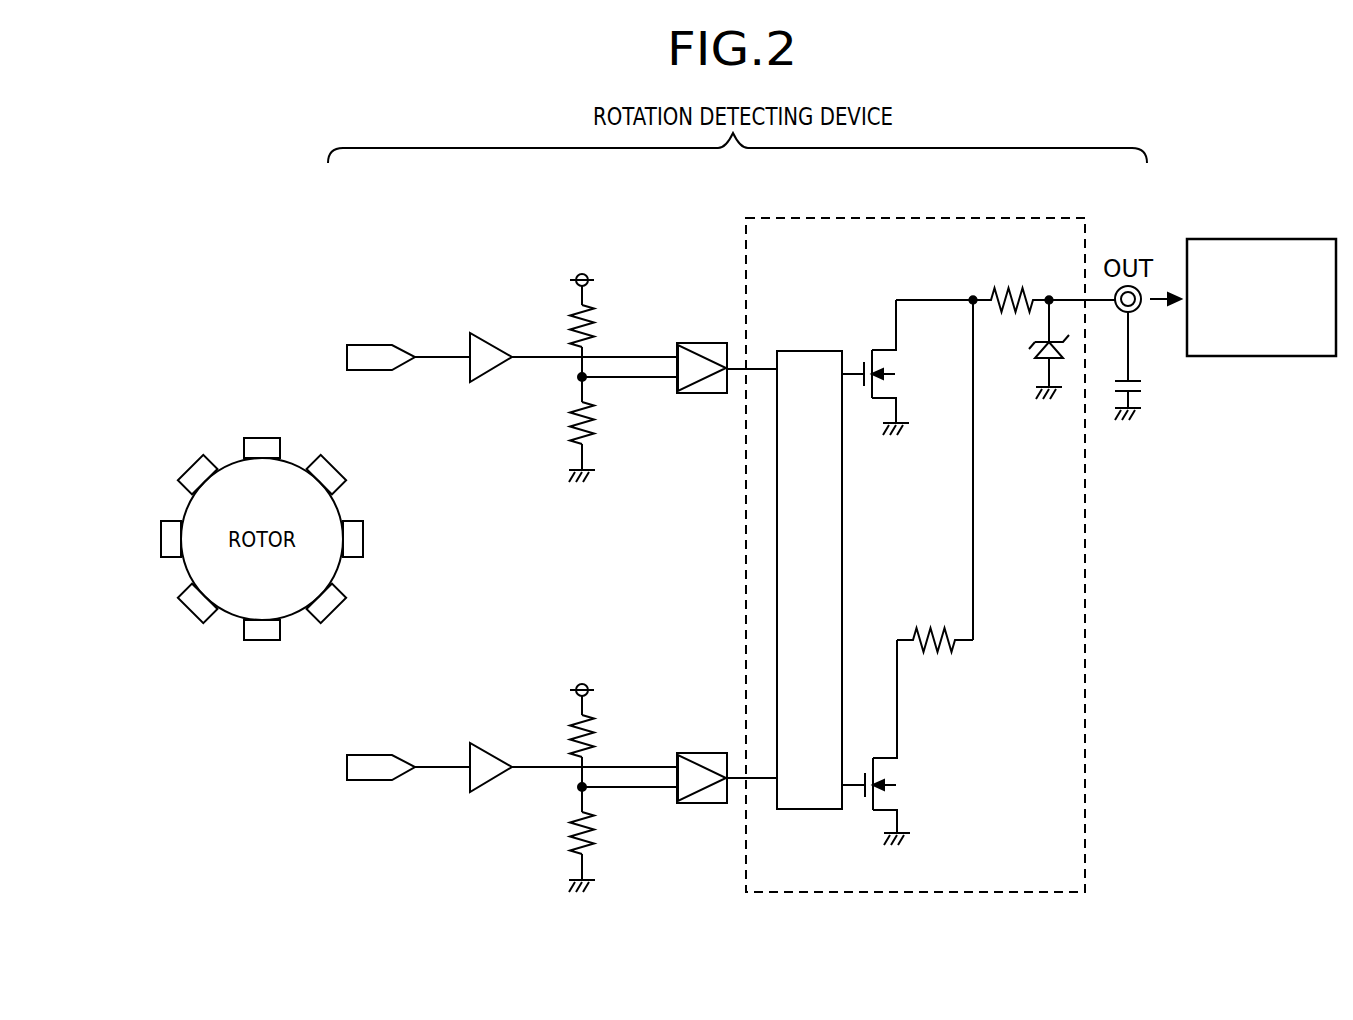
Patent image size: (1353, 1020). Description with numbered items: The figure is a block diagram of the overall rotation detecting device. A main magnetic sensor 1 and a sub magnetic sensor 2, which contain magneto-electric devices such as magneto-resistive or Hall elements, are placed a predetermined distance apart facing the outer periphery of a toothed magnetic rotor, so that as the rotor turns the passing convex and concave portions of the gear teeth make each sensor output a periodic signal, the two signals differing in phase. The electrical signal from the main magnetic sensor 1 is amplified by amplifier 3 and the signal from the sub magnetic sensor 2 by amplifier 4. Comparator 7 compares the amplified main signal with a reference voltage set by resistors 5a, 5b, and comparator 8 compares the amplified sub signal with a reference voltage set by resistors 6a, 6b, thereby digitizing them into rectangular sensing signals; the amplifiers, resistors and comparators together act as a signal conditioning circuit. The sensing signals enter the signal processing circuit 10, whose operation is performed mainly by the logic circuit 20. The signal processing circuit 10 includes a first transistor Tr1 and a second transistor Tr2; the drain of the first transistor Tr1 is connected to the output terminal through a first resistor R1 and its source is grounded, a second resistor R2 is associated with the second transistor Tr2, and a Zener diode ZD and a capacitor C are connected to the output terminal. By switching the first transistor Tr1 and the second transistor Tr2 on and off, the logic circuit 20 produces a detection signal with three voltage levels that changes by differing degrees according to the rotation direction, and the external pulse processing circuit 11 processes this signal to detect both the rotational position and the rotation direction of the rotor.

The main magnetic sensor 1 is at (395, 345).
The sub magnetic sensor 2 is at (395, 755).
The amplifier 3 is at (490, 333).
The amplifier 4 is at (490, 743).
The resistor 5a is at (593, 318).
The resistor 5b is at (593, 416).
The resistor 6a is at (593, 728).
The resistor 6b is at (593, 826).
The comparator 7 is at (698, 343).
The comparator 8 is at (698, 753).
The signal processing circuit 10 is at (978, 218).
The pulse processing circuit 11 is at (1250, 238).
The logic circuit 20 is at (805, 352).
The first resistor R1 is at (1002, 290).
The second resistor R2 is at (953, 643).
The Zener diode ZD is at (1050, 340).
The first transistor Tr1 is at (885, 400).
The second transistor Tr2 is at (885, 757).
The capacitor C is at (1133, 383).